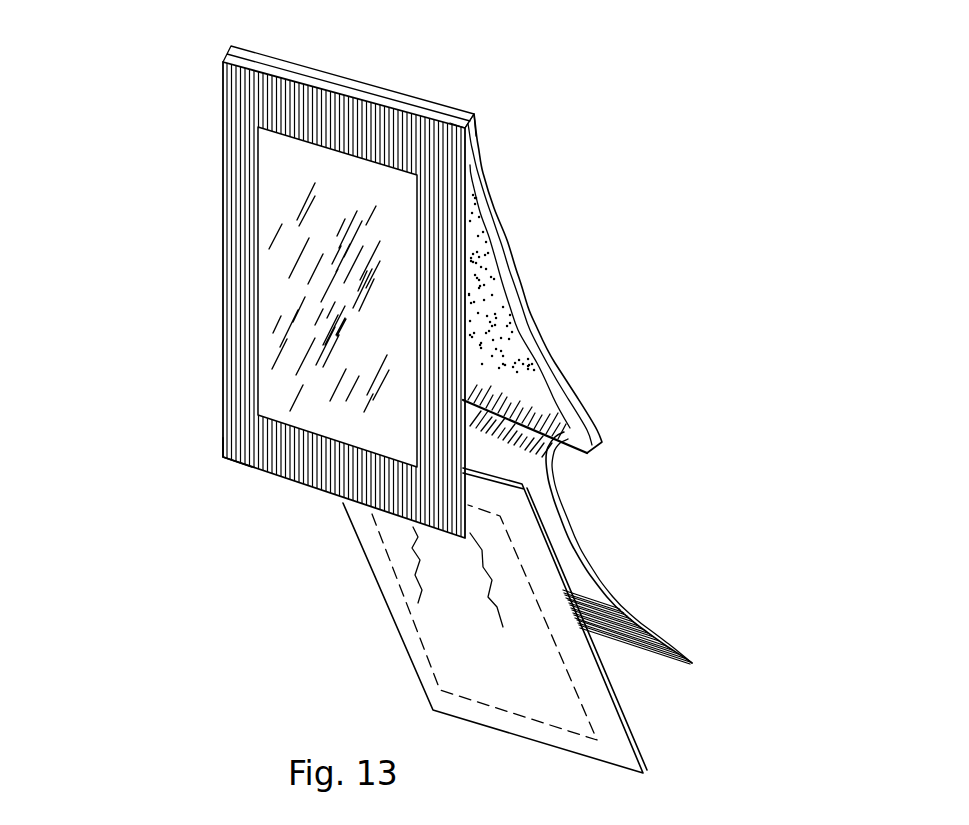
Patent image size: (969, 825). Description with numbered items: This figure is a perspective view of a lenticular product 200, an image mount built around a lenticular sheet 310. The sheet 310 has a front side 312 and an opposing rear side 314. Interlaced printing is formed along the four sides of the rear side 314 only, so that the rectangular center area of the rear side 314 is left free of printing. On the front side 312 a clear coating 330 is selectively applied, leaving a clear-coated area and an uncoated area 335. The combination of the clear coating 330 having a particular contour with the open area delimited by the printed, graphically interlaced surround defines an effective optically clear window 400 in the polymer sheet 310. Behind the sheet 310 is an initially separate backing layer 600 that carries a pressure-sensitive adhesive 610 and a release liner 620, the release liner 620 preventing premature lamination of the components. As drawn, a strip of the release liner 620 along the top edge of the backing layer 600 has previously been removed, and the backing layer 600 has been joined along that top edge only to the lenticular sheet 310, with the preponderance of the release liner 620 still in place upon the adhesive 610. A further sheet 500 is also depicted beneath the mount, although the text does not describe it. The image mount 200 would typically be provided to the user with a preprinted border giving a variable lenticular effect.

The lenticular product 200 is at (190, 254).
The lenticular sheet 310 is at (242, 94).
The front side 312 is at (232, 450).
The rear side 314 is at (466, 253).
The clear coating 330 is at (318, 178).
The uncoated area 335 is at (473, 130).
The window 400 is at (276, 330).
The backing sheet 500 is at (402, 572).
The backing layer 600 is at (507, 280).
The pressure-sensitive adhesive 610 is at (503, 347).
The release liner 620 is at (558, 543).